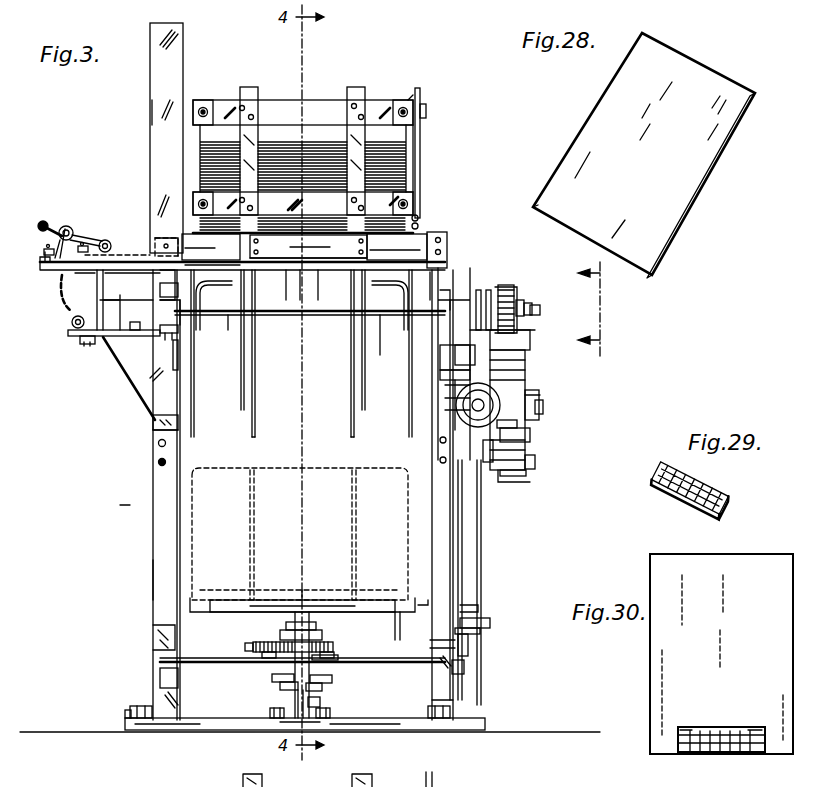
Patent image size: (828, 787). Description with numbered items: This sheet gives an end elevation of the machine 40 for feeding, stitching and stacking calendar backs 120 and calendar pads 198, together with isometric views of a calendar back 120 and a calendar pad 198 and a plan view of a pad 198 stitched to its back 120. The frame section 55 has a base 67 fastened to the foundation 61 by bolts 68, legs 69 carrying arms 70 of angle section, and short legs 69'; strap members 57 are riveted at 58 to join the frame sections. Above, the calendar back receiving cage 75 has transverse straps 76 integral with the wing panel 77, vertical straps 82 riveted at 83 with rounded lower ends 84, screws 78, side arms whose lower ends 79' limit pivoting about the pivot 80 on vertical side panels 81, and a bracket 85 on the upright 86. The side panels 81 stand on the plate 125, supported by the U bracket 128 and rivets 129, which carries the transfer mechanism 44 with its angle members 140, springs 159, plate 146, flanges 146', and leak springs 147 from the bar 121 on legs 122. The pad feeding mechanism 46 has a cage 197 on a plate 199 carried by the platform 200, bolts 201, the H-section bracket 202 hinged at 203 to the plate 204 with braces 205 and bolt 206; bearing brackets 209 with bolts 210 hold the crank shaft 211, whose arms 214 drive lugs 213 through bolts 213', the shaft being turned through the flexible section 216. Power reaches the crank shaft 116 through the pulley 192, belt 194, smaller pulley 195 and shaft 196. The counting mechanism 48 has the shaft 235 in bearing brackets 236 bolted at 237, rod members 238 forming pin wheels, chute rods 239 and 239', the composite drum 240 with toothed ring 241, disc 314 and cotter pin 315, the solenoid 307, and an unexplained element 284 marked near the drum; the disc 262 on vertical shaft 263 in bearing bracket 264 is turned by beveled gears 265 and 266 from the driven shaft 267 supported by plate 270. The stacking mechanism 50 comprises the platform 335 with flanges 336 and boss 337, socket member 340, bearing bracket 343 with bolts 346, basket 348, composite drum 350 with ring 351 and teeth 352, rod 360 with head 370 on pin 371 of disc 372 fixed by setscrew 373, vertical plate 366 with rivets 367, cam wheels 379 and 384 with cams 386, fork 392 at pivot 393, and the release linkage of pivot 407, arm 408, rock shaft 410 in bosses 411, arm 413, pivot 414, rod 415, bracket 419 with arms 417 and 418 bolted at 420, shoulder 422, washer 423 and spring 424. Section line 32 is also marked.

In FIG. 3, the section line 32- 32 is at (599, 309).
In FIG. 3, the machine 40 is at (96, 508).
In FIG. 3, the calendar back pickup and transfer mechanism 44 is at (450, 295).
In FIG. 3, the calendar pad receiving and feeding mechanism 46 is at (185, 48).
In FIG. 3, the stitched calendar pad and back unit receiving and counting mechanism 48 is at (513, 264).
In FIG. 3, the stitched calendar pad and back unit stacking mechanism 50 is at (309, 579).
In FIG. 3, the frame section 55 is at (146, 578).
In FIG. 3, the strap member 57 is at (155, 440).
In FIG. 3, the rivets 58 is at (166, 445).
In FIG. 3, the foundation 61 is at (60, 730).
In FIG. 3, the base 67 is at (125, 715).
In FIG. 3, the bolts 68 is at (133, 706).
In FIG. 3, the legs 69 is at (327, 495).
In FIG. 3, the short legs 69' is at (322, 674).
In FIG. 3, the arm 70 is at (150, 378).
In FIG. 3, the calendar back receiving cage 75 is at (405, 100).
In FIG. 3, the transverse straps 76 is at (328, 98).
In FIG. 3, the side or wing panel 77 is at (418, 165).
In FIG. 3, the screws 78 is at (203, 100).
In FIG. 3, the lower end of arm 79' is at (431, 209).
In FIG. 3, the pivot 80 is at (420, 226).
In FIG. 3, the vertical side panels 81 is at (430, 262).
In FIG. 3, the vertical straps 82 is at (252, 130).
In FIG. 3, the rivets 83 is at (250, 115).
In FIG. 3, the forwardly rounded lower end 84 is at (250, 205).
In FIG. 3, the bracket 85 is at (420, 110).
In FIG. 3, the vertical upright 86 is at (420, 92).
In FIG. 3, the crank shaft 116 is at (540, 412).
In FIG. 3, the calendar back 120 is at (324, 160).
In FIG. 28, the calendar back 120 is at (705, 72).
In FIG. 30, the calendar back 120 is at (760, 562).
In FIG. 3, the transversely disposed bar 121 is at (440, 236).
In FIG. 3, the vertical legs 122 is at (447, 240).
In FIG. 3, the plate 125 is at (318, 285).
In FIG. 3, the U bracket 128 is at (228, 330).
In FIG. 3, the rivets or bolts 129 is at (230, 285).
In FIG. 3, the angle members 140 is at (210, 246).
In FIG. 3, the plate 146 is at (315, 311).
In FIG. 3, the vertical flanges 146' is at (285, 297).
In FIG. 3, the leak springs 147 is at (252, 246).
In FIG. 3, the spring 159 is at (212, 262).
In FIG. 3, the pulley 192 is at (540, 398).
In FIG. 3, the continuous belt 194 is at (515, 482).
In FIG. 3, the smaller pulley 195 is at (525, 475).
In FIG. 3, the shaft 196 is at (535, 462).
In FIG. 3, the cage or holder 197 is at (152, 109).
In FIG. 29, the calendar pad 198 is at (722, 500).
In FIG. 30, the calendar pad 198 is at (710, 752).
In FIG. 3, the plate 199 is at (48, 245).
In FIG. 3, the platform 200 is at (45, 272).
In FIG. 3, the bolts 201 is at (100, 285).
In FIG. 3, the bracket 202 is at (104, 296).
In FIG. 3, the hinge 203 is at (72, 324).
In FIG. 3, the plate 204 is at (118, 340).
In FIG. 3, the brace members 205 is at (173, 353).
In FIG. 3, the bolt 206 is at (108, 341).
In FIG. 3, the bearing brackets 209 is at (80, 222).
In FIG. 3, the bolts 210 is at (48, 248).
In FIG. 3, the crank shaft 211 is at (65, 215).
In FIG. 3, the lugs 213 is at (95, 225).
In FIG. 3, the bolts 213' is at (117, 226).
In FIG. 3, the arms 214 is at (45, 222).
In FIG. 3, the flexible drive shaft section 216 is at (60, 310).
In FIG. 3, the shaft 235 is at (296, 340).
In FIG. 3, the bearing brackets 236 is at (175, 305).
In FIG. 3, the bolts 237 is at (160, 350).
In FIG. 3, the wire or light rod members 238 is at (220, 230).
In FIG. 3, the depending rods 239 is at (292, 449).
In FIG. 3, the depending rods 239' is at (254, 422).
In FIG. 3, the composite drum 240 is at (512, 292).
In FIG. 3, the outer ring 241 is at (505, 290).
In FIG. 3, the disc 262 is at (525, 330).
In FIG. 3, the vertical shaft 263 is at (482, 535).
In FIG. 3, the bearing bracket 264 is at (515, 438).
In FIG. 3, the beveled gear 265 is at (486, 460).
In FIG. 3, the beveled gear 266 is at (535, 402).
In FIG. 3, the driven shaft 267 is at (530, 395).
In FIG. 3, the supporting plate 270 is at (515, 428).
In FIG. 3, the block 284 is at (479, 355).
In FIG. 3, the solenoid 307 is at (485, 295).
In FIG. 3, the disc 314 is at (520, 306).
In FIG. 3, the cotter pin 315 is at (528, 305).
In FIG. 3, the platform 335 is at (205, 605).
In FIG. 3, the side flanges 336 is at (195, 604).
In FIG. 3, the central boss 337 is at (325, 600).
In FIG. 3, the socket member 340 is at (290, 625).
In FIG. 3, the bearing bracket 343 is at (292, 702).
In FIG. 3, the bolts 346 is at (270, 711).
In FIG. 3, the wire basket 348 is at (285, 468).
In FIG. 3, the composite drum 350 is at (250, 648).
In FIG. 3, the outer ring 351 is at (265, 653).
In FIG. 3, the teeth 352 is at (275, 636).
In FIG. 3, the rod 360 is at (392, 640).
In FIG. 3, the vertical plate 366 is at (320, 702).
In FIG. 3, the rivets 367 is at (290, 715).
In FIG. 3, the apertured head 370 is at (470, 632).
In FIG. 3, the headed pin 371 is at (485, 632).
In FIG. 3, the disc 372 is at (490, 625).
In FIG. 3, the setscrew 373 is at (470, 618).
In FIG. 3, the cam wheel 379 is at (340, 657).
In FIG. 3, the second cam wheel 384 is at (275, 678).
In FIG. 3, the peripheral cams 386 is at (330, 679).
In FIG. 3, the fork 392 is at (322, 688).
In FIG. 3, the pivot 393 is at (290, 687).
In FIG. 3, the pivot 407 is at (318, 632).
In FIG. 3, the arm 408 is at (325, 640).
In FIG. 3, the rock shaft 410 is at (235, 666).
In FIG. 3, the bearing bosses 411 is at (160, 678).
In FIG. 3, the arm 413 is at (458, 670).
In FIG. 3, the pivot 414 is at (445, 645).
In FIG. 3, the vertical rod 415 is at (462, 570).
In FIG. 3, the arm 417 is at (440, 443).
In FIG. 3, the arm 418 is at (450, 372).
In FIG. 3, the bracket 419 is at (455, 410).
In FIG. 3, the bolts 420 is at (440, 356).
In FIG. 3, the shoulder 422 is at (520, 376).
In FIG. 3, the washer 423 is at (455, 388).
In FIG. 3, the compression spring 424 is at (455, 400).